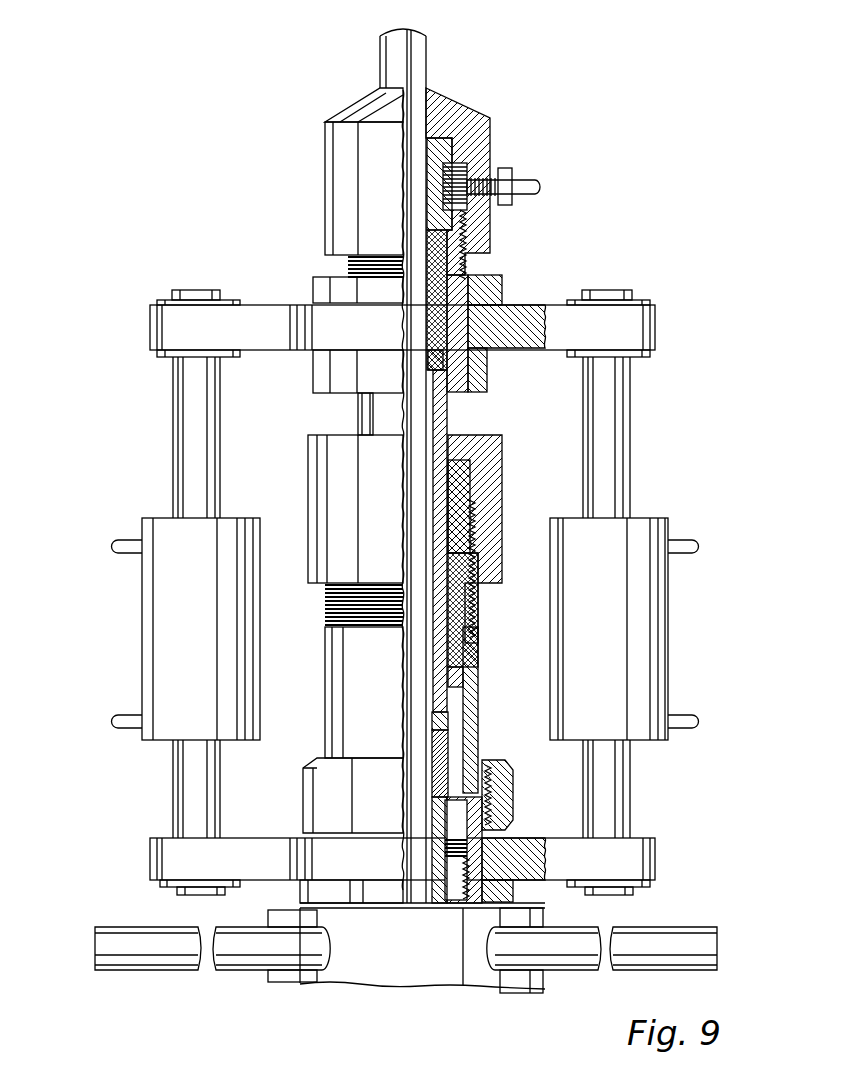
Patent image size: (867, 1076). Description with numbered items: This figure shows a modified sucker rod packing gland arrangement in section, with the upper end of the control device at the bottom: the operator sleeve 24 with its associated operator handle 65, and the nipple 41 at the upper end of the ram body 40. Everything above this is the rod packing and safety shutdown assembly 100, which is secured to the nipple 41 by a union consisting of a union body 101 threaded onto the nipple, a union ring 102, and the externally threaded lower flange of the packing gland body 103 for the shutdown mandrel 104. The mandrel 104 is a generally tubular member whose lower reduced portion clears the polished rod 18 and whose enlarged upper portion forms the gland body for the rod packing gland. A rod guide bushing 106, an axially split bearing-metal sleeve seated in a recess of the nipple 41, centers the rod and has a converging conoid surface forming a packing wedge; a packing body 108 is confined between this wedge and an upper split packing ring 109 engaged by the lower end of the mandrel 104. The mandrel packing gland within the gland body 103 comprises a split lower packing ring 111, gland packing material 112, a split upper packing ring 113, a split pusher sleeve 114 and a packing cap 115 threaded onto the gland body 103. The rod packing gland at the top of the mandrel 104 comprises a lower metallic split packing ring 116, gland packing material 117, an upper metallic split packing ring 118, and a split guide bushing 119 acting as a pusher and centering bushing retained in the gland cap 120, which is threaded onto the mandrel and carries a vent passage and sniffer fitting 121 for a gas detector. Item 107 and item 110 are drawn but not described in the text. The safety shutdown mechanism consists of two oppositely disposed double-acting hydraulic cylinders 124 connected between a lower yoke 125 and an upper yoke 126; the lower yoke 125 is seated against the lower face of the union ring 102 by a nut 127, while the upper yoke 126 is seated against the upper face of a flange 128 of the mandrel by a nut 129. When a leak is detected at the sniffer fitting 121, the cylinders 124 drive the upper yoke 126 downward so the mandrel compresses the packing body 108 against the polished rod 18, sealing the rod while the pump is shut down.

The polished rod 18 is at (415, 56).
The operator sleeve 24 is at (340, 988).
The ram body 40 is at (403, 975).
The nipple 41 is at (455, 890).
The operator handle 65 is at (242, 962).
The rod packing and safety shutdown assembly 100 is at (642, 266).
The union body 101 is at (470, 820).
The union ring 102 is at (320, 795).
The packing gland body 103 is at (330, 678).
The shutdown mandrel 104 is at (440, 420).
The rod guide bushing 106 is at (443, 905).
The hex nut 107 is at (500, 795).
The packing body 108 is at (445, 752).
The upper split packing ring 109 is at (445, 720).
The body member 110 is at (462, 698).
The split lower packing ring 111 is at (460, 680).
The gland packing material 112 is at (472, 607).
The split upper packing ring 113 is at (478, 580).
The split pusher sleeve 114 is at (460, 483).
The packing cap 115 is at (330, 472).
The lower metallic split packing ring 116 is at (455, 370).
The gland packing material 117 is at (445, 282).
The upper metallic split packing ring 118 is at (458, 243).
The split guide bushing 119 is at (450, 138).
The gland cap 120 is at (345, 158).
The sniffer fitting 121 is at (503, 185).
The hydraulic cylinders 124 is at (158, 606).
The lower yoke 125 is at (165, 858).
The upper yoke 126 is at (170, 330).
The nut 127 is at (300, 890).
The flange 128 is at (342, 375).
The nut 129 is at (338, 283).